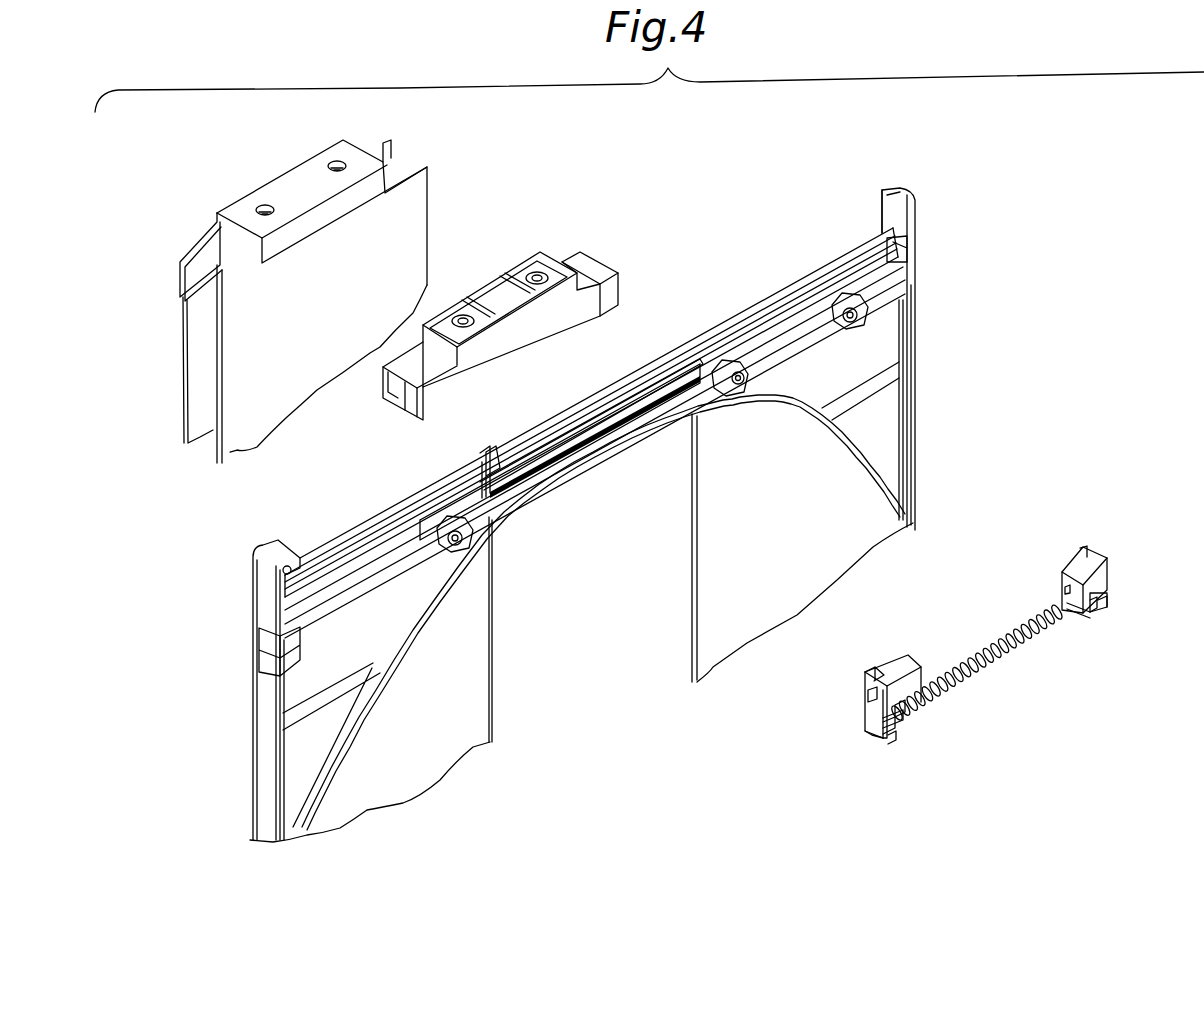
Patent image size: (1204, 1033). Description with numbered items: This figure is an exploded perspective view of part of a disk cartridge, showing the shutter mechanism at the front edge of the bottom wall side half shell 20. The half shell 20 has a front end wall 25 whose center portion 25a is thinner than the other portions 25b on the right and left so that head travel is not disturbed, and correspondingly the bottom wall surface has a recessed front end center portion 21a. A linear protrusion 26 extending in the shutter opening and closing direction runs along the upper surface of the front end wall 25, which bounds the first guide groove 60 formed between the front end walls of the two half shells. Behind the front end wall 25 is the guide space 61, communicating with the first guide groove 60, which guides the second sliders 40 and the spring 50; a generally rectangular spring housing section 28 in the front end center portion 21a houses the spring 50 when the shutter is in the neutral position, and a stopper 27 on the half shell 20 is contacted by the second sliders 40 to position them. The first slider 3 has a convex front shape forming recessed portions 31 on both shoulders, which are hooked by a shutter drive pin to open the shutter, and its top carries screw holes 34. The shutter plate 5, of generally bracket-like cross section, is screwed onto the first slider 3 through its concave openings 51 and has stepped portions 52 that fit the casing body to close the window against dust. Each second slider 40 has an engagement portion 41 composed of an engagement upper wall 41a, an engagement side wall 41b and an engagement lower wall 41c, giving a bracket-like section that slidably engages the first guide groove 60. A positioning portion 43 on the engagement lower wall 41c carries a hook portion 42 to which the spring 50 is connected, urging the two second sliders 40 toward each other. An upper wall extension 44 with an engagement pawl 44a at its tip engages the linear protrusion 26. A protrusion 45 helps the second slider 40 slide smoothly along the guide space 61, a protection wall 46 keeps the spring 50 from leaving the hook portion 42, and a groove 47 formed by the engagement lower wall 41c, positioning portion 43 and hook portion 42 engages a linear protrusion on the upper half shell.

The first slider 3 is at (500, 294).
The shutter plate 5 is at (276, 295).
The bottom wall side half shell 20 is at (625, 511).
The front end center portion 21a is at (577, 455).
The front end wall 25 is at (594, 415).
The center portion 25a is at (573, 412).
The other portions 25b is at (355, 532).
The linear protrusion 26 is at (912, 255).
The stopper 27 is at (643, 387).
The spring housing section 28 is at (528, 467).
The recessed portions 31 is at (594, 265).
The screw holes 34 is at (537, 272).
The second sliders 40 is at (981, 651).
The engagement portions 41 is at (981, 612).
The engagement upper wall 41a is at (902, 663).
The engagement side wall 41b is at (912, 683).
The engagement lower wall 41c is at (870, 717).
The hook portions 42 is at (897, 738).
The positioning portions 43 is at (868, 750).
The upper wall extension 44 is at (862, 672).
The engagement pawl 44a is at (914, 653).
The protrusion 45 is at (865, 735).
The protection wall 46 is at (893, 748).
The groove 47 is at (914, 718).
The spring 50 is at (1015, 680).
The concave openings 51 is at (333, 163).
The stepped portions 52 is at (178, 306).
The first guide groove 60 is at (827, 247).
The guide space 61 is at (912, 340).